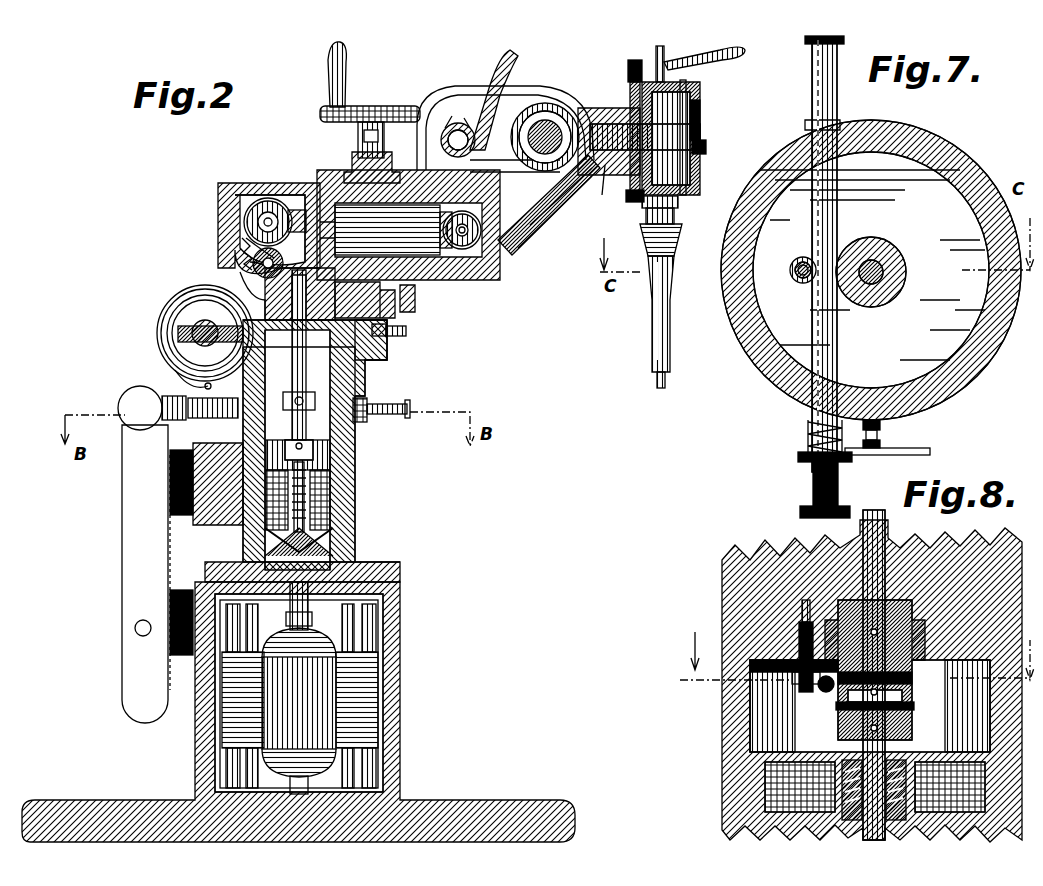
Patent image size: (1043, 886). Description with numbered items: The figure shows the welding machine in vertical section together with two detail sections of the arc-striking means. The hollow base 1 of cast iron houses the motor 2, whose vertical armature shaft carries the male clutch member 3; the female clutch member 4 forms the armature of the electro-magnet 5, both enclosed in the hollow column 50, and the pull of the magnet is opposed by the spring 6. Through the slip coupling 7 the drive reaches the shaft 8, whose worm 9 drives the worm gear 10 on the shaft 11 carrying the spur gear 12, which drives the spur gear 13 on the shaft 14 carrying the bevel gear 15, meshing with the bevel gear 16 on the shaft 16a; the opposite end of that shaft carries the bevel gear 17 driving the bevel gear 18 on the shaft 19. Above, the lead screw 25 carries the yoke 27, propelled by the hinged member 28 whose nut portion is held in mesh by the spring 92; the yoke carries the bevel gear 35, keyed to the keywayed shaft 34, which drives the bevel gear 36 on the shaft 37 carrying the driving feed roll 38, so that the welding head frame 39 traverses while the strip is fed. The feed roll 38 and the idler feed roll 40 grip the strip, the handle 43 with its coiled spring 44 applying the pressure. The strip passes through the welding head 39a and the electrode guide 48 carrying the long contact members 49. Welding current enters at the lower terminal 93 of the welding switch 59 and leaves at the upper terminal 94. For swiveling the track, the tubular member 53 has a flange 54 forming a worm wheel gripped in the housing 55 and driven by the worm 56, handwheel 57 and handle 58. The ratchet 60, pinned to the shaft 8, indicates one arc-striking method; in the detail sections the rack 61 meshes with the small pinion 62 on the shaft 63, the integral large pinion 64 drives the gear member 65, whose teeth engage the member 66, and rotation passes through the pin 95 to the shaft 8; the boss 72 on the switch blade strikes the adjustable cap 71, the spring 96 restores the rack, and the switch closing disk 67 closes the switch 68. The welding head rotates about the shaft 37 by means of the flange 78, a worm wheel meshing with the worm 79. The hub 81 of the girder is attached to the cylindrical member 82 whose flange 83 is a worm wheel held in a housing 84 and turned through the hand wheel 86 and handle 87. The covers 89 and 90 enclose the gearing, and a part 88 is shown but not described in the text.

In FIG. 2, the hollow base 1 is at (400, 738).
In FIG. 2, the motor 2 is at (320, 695).
In FIG. 2, the male clutch member 3 is at (357, 560).
In FIG. 2, the female clutch member 4 is at (340, 545).
In FIG. 2, the electro-magnet 5 is at (322, 507).
In FIG. 2, the spring 6 is at (332, 490).
In FIG. 8, the spring 6 is at (886, 822).
In FIG. 2, the slip coupling 7 is at (313, 445).
In FIG. 2, the shaft 8 is at (300, 382).
In FIG. 8, the shaft 8 is at (872, 512).
In FIG. 2, the worm 9 is at (305, 262).
In FIG. 2, the worm gear 10 is at (254, 278).
In FIG. 2, the shaft 11 is at (238, 262).
In FIG. 2, the spur gear 12 is at (246, 252).
In FIG. 2, the spur gear 13 is at (244, 244).
In FIG. 2, the shaft 14 is at (218, 205).
In FIG. 2, the bevel gear 15 is at (248, 212).
In FIG. 2, the bevel gear 16 is at (272, 205).
In FIG. 2, the shaft 16a is at (445, 262).
In FIG. 2, the bevel gear 17 is at (460, 246).
In FIG. 2, the bevel gear 18 is at (458, 232).
In FIG. 2, the shaft 19 is at (468, 228).
In FIG. 2, the lead screw 25 is at (450, 100).
In FIG. 2, the yoke 27 is at (548, 100).
In FIG. 2, the hinged member 28 is at (492, 62).
In FIG. 2, the keywayed shaft 34 is at (505, 130).
In FIG. 2, the bevel gear 35 is at (592, 115).
In FIG. 2, the bevel gear 36 is at (565, 196).
In FIG. 2, the shaft 37 is at (603, 190).
In FIG. 2, the driving welding-strip feed roll 38 is at (700, 135).
In FIG. 2, the welding head frame 39 is at (555, 212).
In FIG. 2, the welding head 39a is at (678, 196).
In FIG. 2, the idler feed roll 40 is at (698, 112).
In FIG. 2, the handle 43 is at (686, 95).
In FIG. 2, the coiled spring 44 is at (712, 56).
In FIG. 2, the electrode guide 48 is at (650, 242).
In FIG. 2, the electrical contact members 49 is at (652, 296).
In FIG. 2, the hollow column 50 is at (334, 466).
In FIG. 2, the tubular member 53 is at (362, 352).
In FIG. 2, the flange 54 is at (386, 326).
In FIG. 2, the housing 55 is at (406, 333).
In FIG. 2, the worm 56 is at (210, 333).
In FIG. 2, the handwheel 57 is at (185, 305).
In FIG. 2, the handle 58 is at (185, 372).
In FIG. 2, the welding switch 59 is at (122, 525).
In FIG. 2, the ratchet 60 is at (362, 405).
In FIG. 7, the rack 61 is at (837, 335).
In FIG. 8, the rack 61 is at (826, 692).
In FIG. 7, the small pinion 62 is at (800, 258).
In FIG. 8, the small pinion 62 is at (797, 700).
In FIG. 7, the shaft 63 is at (800, 282).
In FIG. 8, the shaft 63 is at (792, 680).
In FIG. 8, the large pinion 64 is at (750, 668).
In FIG. 7, the gear member 65 is at (887, 258).
In FIG. 8, the gear member 65 is at (905, 680).
In FIG. 8, the member 66 is at (912, 712).
In FIG. 7, the switch closing disk 67 is at (798, 457).
In FIG. 7, the switch 68 is at (882, 440).
In FIG. 7, the cap 71 is at (813, 487).
In FIG. 2, the boss 72 is at (140, 386).
In FIG. 2, the flange 78 is at (600, 118).
In FIG. 2, the worm 79 is at (640, 84).
In FIG. 2, the hub 81 is at (505, 248).
In FIG. 2, the cylindrical member 82 is at (446, 248).
In FIG. 2, the flange 83 is at (352, 168).
In FIG. 2, the stem 84 is at (358, 138).
In FIG. 2, the hand wheel 86 is at (367, 106).
In FIG. 2, the handle 87 is at (344, 58).
In FIG. 2, the bearing 88 is at (296, 198).
In FIG. 2, the cover 89 is at (512, 238).
In FIG. 2, the cover 90 is at (704, 150).
In FIG. 2, the spring 92 is at (478, 132).
In FIG. 2, the lower terminal 93 is at (168, 652).
In FIG. 2, the upper terminal 94 is at (170, 488).
In FIG. 8, the pin 95 is at (860, 702).
In FIG. 7, the spring 96 is at (806, 426).